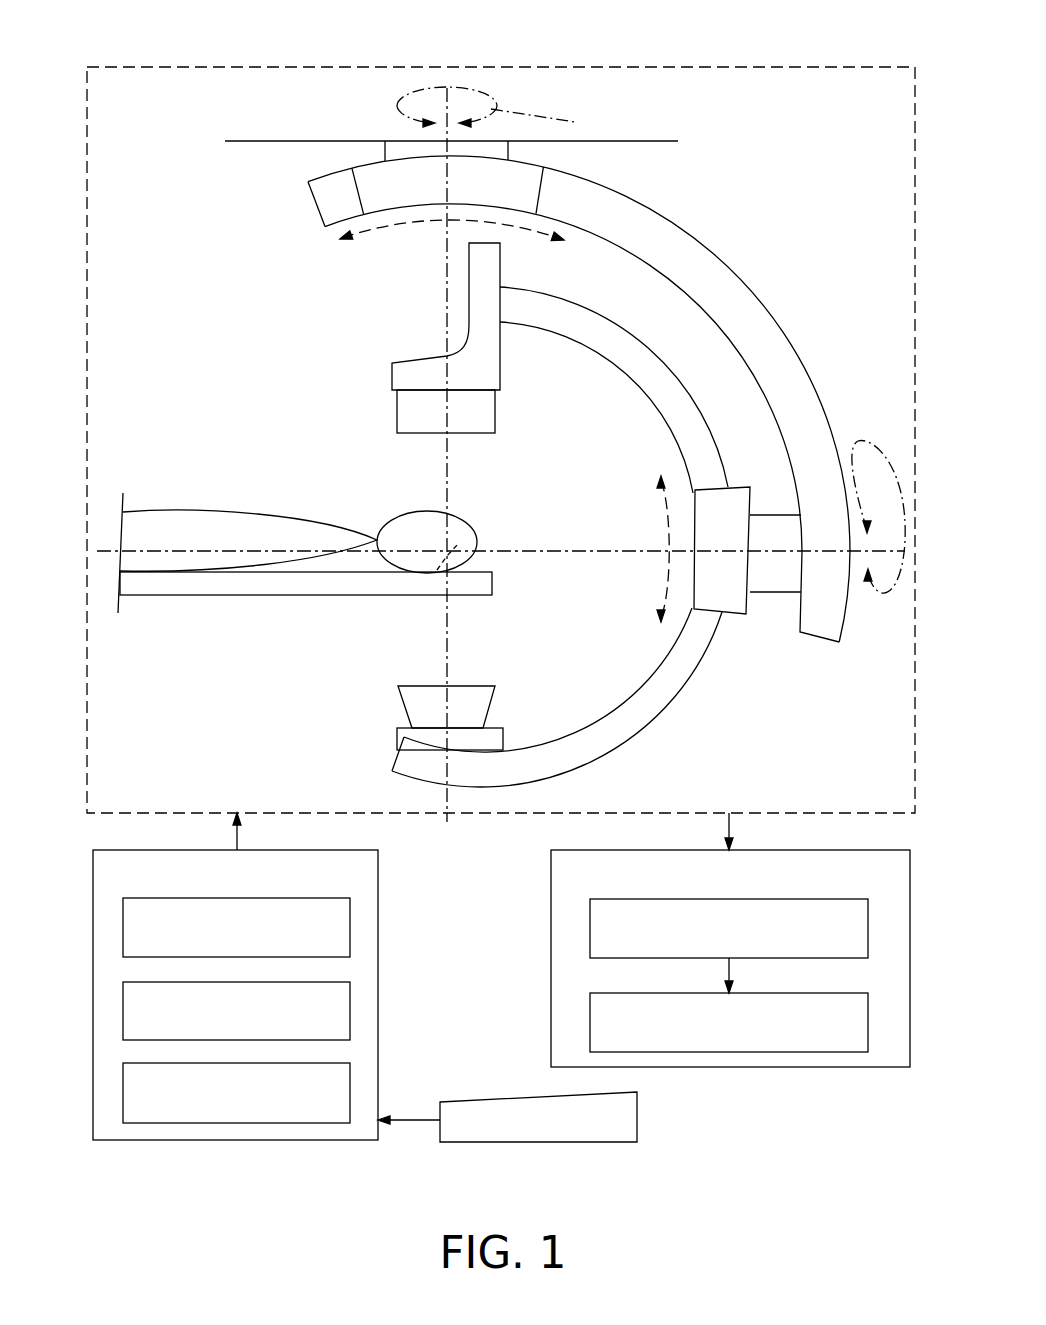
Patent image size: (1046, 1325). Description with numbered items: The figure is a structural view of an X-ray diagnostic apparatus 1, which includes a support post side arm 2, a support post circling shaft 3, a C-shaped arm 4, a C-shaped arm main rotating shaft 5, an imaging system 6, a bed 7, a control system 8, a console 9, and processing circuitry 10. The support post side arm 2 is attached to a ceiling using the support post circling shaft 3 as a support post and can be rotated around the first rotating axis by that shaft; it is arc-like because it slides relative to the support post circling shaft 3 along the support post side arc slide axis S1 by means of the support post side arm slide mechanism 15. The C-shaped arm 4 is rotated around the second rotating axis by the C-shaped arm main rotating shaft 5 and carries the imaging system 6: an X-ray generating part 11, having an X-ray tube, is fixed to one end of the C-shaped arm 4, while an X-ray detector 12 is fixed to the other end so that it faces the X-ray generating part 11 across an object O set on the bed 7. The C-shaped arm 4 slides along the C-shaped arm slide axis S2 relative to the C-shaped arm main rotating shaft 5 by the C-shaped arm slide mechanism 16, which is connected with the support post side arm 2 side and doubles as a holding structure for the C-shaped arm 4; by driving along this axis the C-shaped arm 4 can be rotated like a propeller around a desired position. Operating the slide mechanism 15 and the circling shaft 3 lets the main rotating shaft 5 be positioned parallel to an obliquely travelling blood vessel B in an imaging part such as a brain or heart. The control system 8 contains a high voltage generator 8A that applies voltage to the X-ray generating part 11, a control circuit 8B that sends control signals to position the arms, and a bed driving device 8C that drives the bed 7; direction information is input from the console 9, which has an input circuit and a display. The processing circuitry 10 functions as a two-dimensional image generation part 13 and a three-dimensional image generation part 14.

The X-ray diagnostic apparatus 1 is at (205, 49).
The support post side arm 2 is at (752, 300).
The support post circling shaft 3 is at (510, 149).
The C-shaped arm 4 is at (625, 375).
The C-shaped arm main rotating shaft 5 is at (792, 513).
The imaging system 6 is at (386, 400).
The bed 7 is at (322, 595).
The control system 8 is at (390, 874).
The high voltage generator 8A is at (350, 925).
The control circuit 8B is at (350, 1007).
The bed driving device 8C is at (350, 1093).
The console 9 is at (637, 1115).
The processing circuitry 10 is at (532, 871).
The X-ray generating part 11 is at (493, 697).
The X-ray detector 12 is at (475, 433).
The 2D image generation part 13 is at (590, 930).
The 3D image generation part 14 is at (590, 1025).
The support post side arm slide mechanism 15 is at (378, 183).
The C-shaped arm slide mechanism 16 is at (737, 603).
The object O is at (223, 511).
The blood vessel B is at (437, 570).
The support post side arc slide axis S1 is at (410, 232).
The C-shaped arm slide axis S2 is at (658, 572).